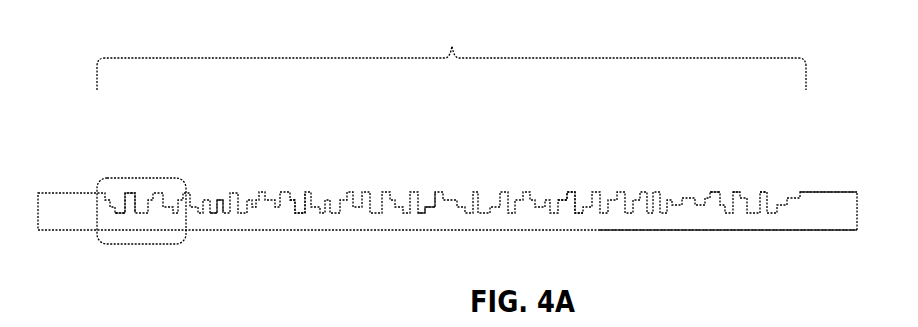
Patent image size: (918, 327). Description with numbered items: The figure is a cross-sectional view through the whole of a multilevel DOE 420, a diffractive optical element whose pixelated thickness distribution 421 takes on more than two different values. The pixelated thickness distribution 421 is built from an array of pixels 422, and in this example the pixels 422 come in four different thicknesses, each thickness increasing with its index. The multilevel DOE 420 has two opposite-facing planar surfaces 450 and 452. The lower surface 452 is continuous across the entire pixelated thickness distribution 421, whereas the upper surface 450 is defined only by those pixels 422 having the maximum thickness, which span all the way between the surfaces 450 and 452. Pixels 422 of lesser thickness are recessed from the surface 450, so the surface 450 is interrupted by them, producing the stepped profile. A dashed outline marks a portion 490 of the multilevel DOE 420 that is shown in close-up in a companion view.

The multilevel DOE 420 is at (47, 221).
The pixelated thickness distribution 421 is at (451, 54).
The pixels 422 is at (568, 200).
The planar surface 450 is at (813, 176).
The planar surface 452 is at (746, 231).
The portion 490 is at (118, 244).